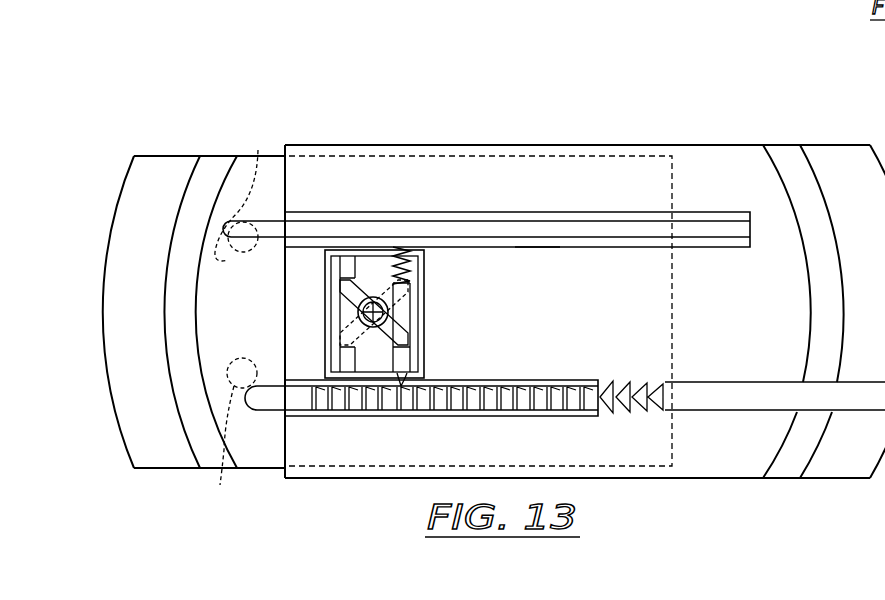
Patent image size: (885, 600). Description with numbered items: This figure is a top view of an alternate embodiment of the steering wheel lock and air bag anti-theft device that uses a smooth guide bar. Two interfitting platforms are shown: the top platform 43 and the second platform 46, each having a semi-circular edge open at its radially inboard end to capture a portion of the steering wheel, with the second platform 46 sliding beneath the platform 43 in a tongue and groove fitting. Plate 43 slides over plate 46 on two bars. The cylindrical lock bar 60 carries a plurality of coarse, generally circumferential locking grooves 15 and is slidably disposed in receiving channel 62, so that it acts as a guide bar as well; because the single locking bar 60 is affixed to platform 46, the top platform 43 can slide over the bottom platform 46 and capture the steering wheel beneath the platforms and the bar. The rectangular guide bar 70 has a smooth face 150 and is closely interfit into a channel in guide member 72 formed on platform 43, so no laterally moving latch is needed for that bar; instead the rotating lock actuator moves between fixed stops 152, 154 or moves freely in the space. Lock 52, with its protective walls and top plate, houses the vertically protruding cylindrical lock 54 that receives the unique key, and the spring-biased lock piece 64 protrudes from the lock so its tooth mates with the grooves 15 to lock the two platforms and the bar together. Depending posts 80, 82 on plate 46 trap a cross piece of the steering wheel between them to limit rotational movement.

The locking grooves 15 is at (624, 383).
The platform 43 is at (823, 145).
The second platform 46 is at (227, 153).
The lock 52 is at (428, 267).
The cylindrical lock 54 is at (390, 299).
The lock bar 60 is at (668, 383).
The receiving channel 62 is at (508, 380).
The lock piece 64 is at (410, 355).
The guide bar 70 is at (561, 221).
The guide member 72 is at (598, 212).
The depending post 80 is at (226, 434).
The depending post 82 is at (240, 191).
The smooth face 150 is at (547, 236).
The fixed stop 152 is at (338, 268).
The fixed stop 154 is at (342, 357).